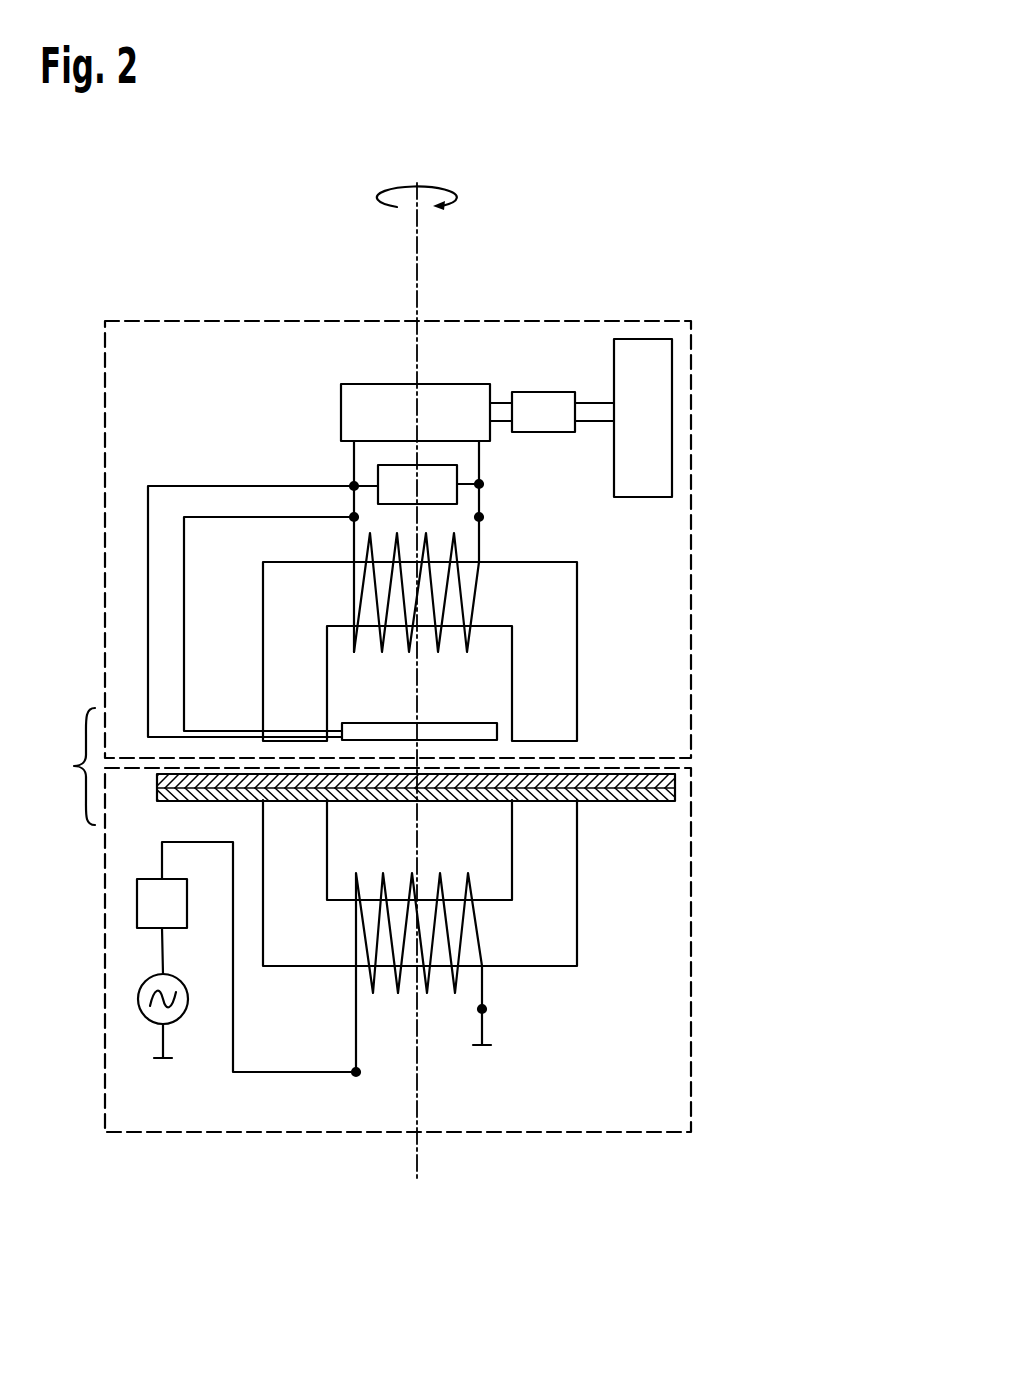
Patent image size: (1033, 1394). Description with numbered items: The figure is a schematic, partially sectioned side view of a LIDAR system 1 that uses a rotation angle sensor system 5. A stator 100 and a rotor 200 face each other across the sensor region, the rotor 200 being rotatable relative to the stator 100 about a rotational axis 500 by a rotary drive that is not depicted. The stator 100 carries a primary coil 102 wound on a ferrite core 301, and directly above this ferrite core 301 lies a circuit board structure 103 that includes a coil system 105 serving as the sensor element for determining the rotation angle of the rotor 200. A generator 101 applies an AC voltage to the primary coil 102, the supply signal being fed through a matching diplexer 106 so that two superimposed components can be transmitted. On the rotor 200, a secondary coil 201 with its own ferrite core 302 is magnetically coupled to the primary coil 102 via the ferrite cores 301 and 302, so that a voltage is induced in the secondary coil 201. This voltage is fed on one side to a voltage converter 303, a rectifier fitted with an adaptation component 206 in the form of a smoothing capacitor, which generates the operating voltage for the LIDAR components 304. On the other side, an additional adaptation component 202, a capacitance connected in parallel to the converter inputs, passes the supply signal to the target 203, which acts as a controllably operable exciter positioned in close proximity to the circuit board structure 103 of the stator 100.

The LIDAR system 1 is at (94, 230).
The rotation angle sensor system 5 is at (75, 766).
The stator 100 is at (228, 1133).
The generator 101 is at (138, 999).
The primary coil 102 is at (343, 942).
The circuit board structure 103 is at (693, 782).
The coil system 105 is at (417, 794).
The matching diplexer 106 is at (137, 905).
The rotor 200 is at (224, 321).
The secondary coil 201 is at (345, 593).
The additional adaptation component 202 is at (457, 497).
The target 203 is at (520, 732).
The adaptation component 206 is at (535, 392).
The ferrite core 301 is at (592, 940).
The ferrite core 302 is at (592, 655).
The voltage converter 303 is at (455, 384).
The LIDAR components 304 is at (642, 339).
The rotational axis 500 is at (414, 186).